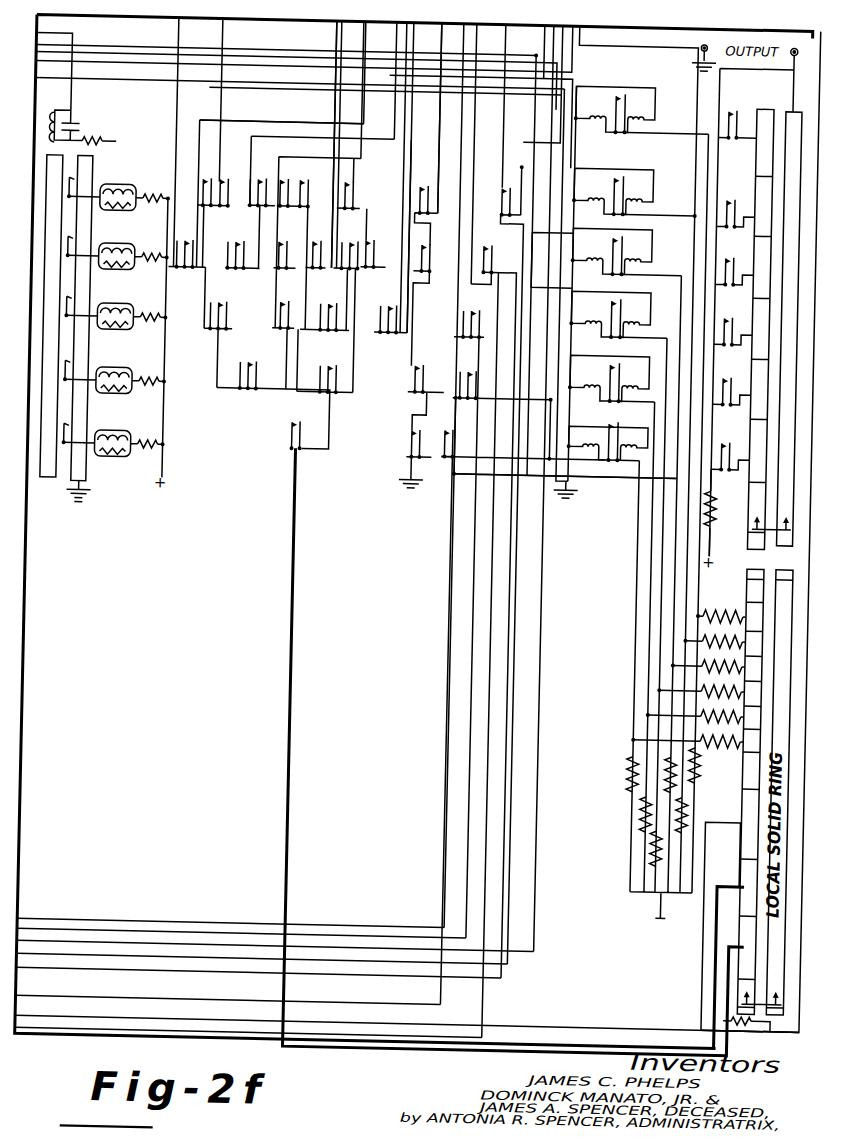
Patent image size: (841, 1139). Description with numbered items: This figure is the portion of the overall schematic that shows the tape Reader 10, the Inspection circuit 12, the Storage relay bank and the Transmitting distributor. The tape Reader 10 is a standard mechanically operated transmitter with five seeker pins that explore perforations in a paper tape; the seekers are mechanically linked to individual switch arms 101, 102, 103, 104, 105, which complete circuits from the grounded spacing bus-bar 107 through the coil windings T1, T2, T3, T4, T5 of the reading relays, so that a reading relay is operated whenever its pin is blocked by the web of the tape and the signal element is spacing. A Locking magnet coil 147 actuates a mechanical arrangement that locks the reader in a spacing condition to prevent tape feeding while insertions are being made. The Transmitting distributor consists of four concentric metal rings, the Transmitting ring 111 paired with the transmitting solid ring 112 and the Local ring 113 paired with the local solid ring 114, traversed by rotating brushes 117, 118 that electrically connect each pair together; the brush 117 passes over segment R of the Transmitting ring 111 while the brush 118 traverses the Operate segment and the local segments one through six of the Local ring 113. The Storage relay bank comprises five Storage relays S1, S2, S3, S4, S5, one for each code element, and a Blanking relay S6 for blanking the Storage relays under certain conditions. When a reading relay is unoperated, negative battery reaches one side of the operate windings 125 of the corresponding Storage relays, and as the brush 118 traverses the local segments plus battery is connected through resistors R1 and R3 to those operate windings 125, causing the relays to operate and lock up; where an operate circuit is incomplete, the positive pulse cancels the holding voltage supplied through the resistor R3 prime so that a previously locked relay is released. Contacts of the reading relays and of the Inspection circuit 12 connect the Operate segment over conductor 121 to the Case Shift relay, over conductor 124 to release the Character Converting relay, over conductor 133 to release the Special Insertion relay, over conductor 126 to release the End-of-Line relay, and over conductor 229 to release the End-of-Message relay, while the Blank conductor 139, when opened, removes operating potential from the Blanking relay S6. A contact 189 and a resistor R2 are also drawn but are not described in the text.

The tape Reader 10 is at (92, 544).
The Inspection circuit 12 is at (271, 506).
The switch arm 101 is at (64, 432).
The switch arm 102 is at (64, 369).
The switch arm 103 is at (64, 305).
The switch arm 104 is at (64, 245).
The switch arm 105 is at (64, 186).
The spacing bus-bar 107 is at (85, 480).
The Transmitting ring 111 is at (756, 546).
The transmitting solid ring 112 is at (788, 542).
The Local ring 113 is at (747, 1030).
The local solid ring 114 is at (748, 568).
The distributor brush 117 is at (771, 540).
The distributor brush 118 is at (752, 1002).
The conductor 121 is at (431, 172).
The conductor 124 is at (403, 150).
The operate windings 125 is at (637, 196).
The conductor 126 is at (346, 186).
The conductor 133 is at (326, 185).
The Blank conductor 139 is at (168, 121).
The Locking magnet coil 147 is at (84, 94).
The relay contact 189 is at (245, 366).
The conductor 229 is at (240, 125).
The resistor R1 is at (758, 1028).
The resistor R2 is at (713, 505).
The resistors R3 is at (729, 605).
The Storage relay S1 is at (607, 450).
The Storage relay S2 is at (611, 388).
The Storage relay S3 is at (618, 324).
The Storage relay S4 is at (626, 261).
The Storage relay S5 is at (634, 201).
The Blanking relay S6 is at (641, 119).
The reading relay coil winding T1 is at (113, 433).
The reading relay coil winding T2 is at (115, 370).
The reading relay coil winding T3 is at (116, 308).
The reading relay coil winding T4 is at (117, 247).
The reading relay coil winding T5 is at (119, 188).